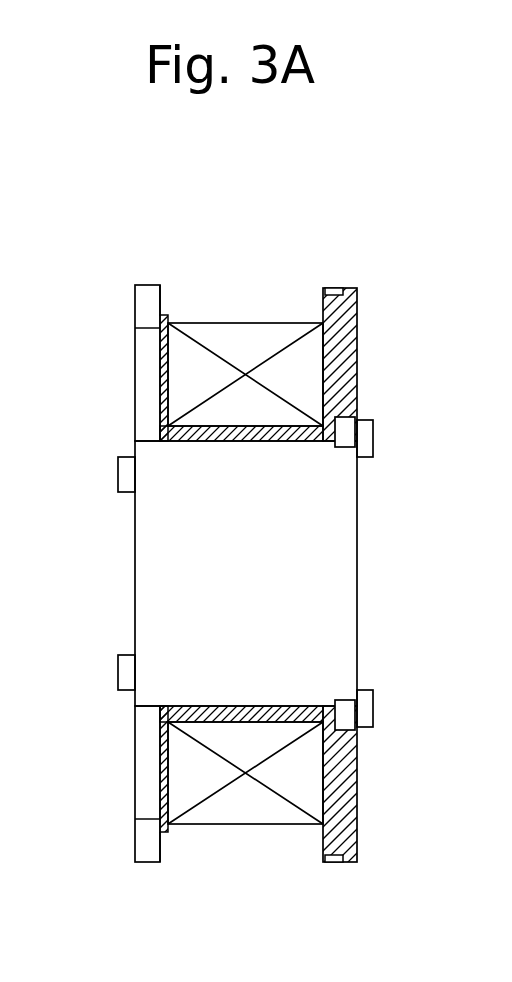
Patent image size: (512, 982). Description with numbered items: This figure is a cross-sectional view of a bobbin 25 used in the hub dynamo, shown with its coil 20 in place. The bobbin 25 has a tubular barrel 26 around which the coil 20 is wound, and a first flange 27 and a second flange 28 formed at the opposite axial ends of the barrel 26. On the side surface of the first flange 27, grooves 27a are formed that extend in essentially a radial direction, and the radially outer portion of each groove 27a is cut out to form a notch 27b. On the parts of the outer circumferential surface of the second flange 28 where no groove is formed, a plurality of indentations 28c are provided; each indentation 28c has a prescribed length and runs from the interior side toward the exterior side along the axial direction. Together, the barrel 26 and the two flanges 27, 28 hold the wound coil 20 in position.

The coil 20 is at (222, 338).
The bobbin 25 is at (398, 225).
The tubular barrel 26 is at (273, 442).
The first flange 27 is at (143, 297).
The groove 27a is at (165, 367).
The notch 27b is at (163, 298).
The second flange 28 is at (357, 328).
The indentation 28c is at (332, 288).